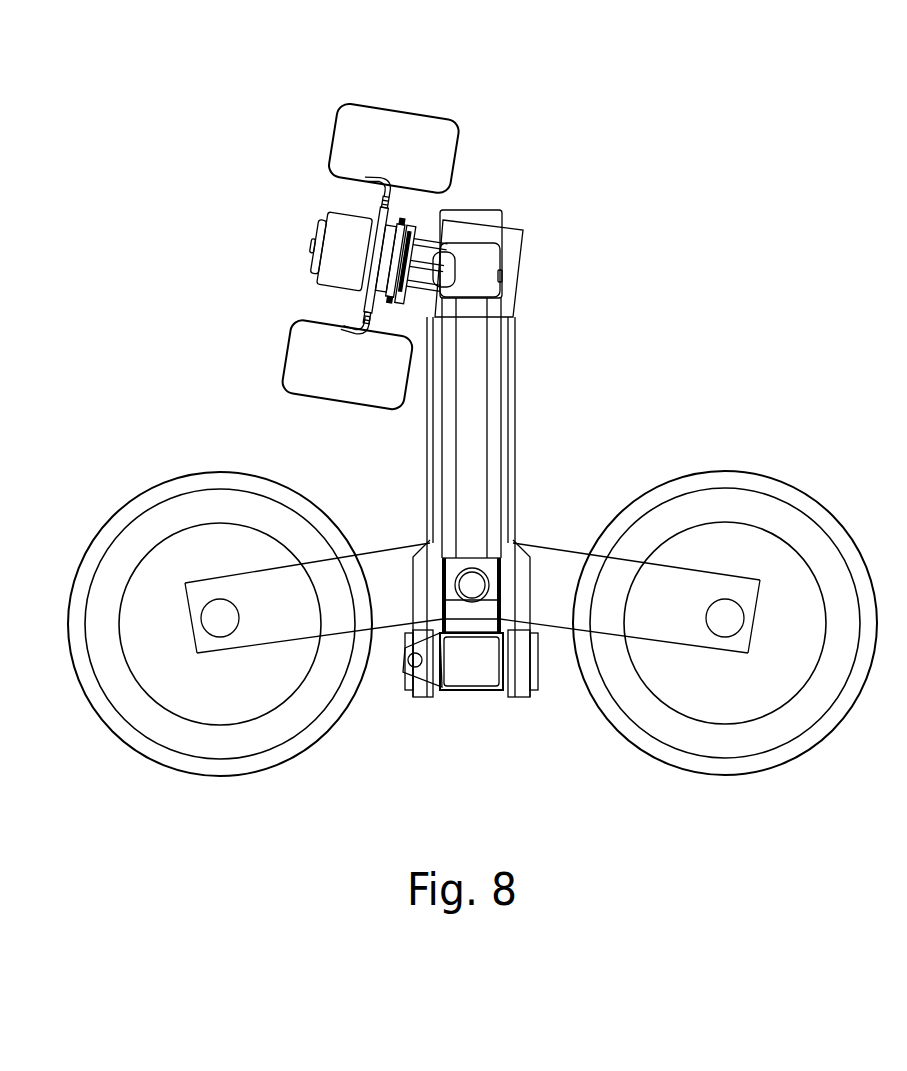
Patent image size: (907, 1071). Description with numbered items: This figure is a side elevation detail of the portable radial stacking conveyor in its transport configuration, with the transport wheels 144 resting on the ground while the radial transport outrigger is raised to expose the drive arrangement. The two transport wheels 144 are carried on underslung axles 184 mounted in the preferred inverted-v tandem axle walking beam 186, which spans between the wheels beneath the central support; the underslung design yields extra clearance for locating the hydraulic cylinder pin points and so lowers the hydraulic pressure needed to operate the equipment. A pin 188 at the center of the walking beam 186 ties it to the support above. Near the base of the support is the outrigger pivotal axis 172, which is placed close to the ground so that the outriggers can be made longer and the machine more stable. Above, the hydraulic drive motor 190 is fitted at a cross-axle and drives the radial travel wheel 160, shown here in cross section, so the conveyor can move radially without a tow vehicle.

The transport wheels 144 is at (200, 475).
The underslung axle 184 is at (220, 639).
The tandem axle walking beam 186 is at (563, 632).
The pivot pin 188 is at (471, 606).
The outrigger pivotal axis 172 is at (403, 698).
The radial travel wheel 160 is at (382, 114).
The hydraulic drive motor 190 is at (316, 240).